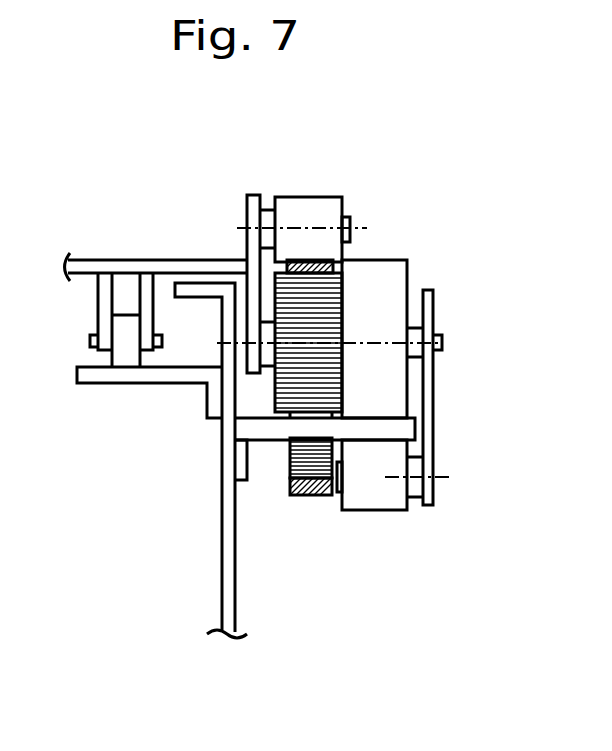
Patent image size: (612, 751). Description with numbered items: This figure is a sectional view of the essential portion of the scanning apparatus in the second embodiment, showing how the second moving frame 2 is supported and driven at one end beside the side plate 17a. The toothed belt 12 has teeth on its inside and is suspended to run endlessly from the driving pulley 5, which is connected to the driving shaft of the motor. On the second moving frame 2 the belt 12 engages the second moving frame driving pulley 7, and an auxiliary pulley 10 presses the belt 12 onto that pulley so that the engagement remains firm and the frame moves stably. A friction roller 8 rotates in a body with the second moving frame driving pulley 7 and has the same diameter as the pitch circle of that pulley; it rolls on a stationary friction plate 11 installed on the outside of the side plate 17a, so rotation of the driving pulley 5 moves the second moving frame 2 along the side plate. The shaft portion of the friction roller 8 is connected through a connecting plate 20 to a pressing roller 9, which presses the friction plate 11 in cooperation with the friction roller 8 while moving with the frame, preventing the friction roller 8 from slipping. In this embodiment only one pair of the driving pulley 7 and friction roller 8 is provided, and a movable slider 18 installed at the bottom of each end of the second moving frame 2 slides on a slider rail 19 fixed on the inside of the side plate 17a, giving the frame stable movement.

The second moving frame 2 is at (87, 258).
The driving pulley 5 is at (289, 470).
The second moving frame driving pulley 7 is at (298, 365).
The friction roller 8 is at (396, 266).
The pressing roller 9 is at (373, 500).
The auxiliary pulley 10 is at (300, 203).
The friction plate 11 is at (415, 424).
The toothed belt 12 is at (325, 258).
The side plate 17a is at (225, 590).
The slider 18 is at (122, 360).
The slider rail 19 is at (147, 378).
The connecting plate 20 is at (430, 452).